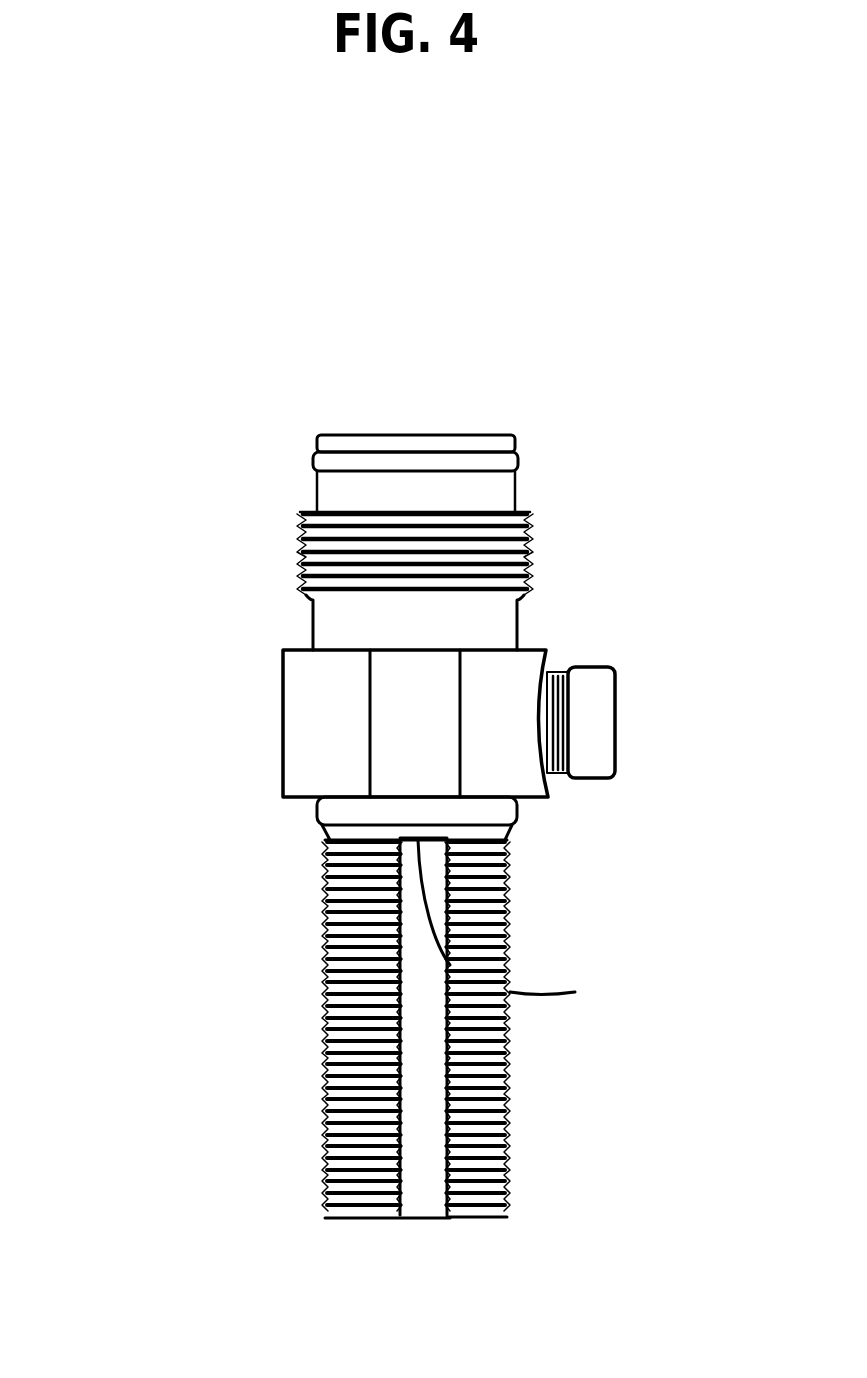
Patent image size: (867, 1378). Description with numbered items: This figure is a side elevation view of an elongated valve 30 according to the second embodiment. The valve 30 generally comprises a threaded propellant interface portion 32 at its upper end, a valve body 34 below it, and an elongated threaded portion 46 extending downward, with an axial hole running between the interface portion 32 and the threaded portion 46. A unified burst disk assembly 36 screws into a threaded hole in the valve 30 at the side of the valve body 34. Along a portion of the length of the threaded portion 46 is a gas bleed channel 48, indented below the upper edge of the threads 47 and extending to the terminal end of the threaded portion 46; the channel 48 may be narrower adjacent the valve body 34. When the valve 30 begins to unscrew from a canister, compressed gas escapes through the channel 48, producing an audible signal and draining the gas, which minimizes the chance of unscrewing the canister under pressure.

The valve 30 is at (425, 357).
The threaded propellant interface portion 32 is at (288, 517).
The valve body 34 is at (255, 695).
The unified burst disk assembly 36 is at (615, 731).
The threaded portion 46 is at (303, 970).
The threads 47 is at (330, 1128).
The gas bleed channel 48 is at (428, 1047).